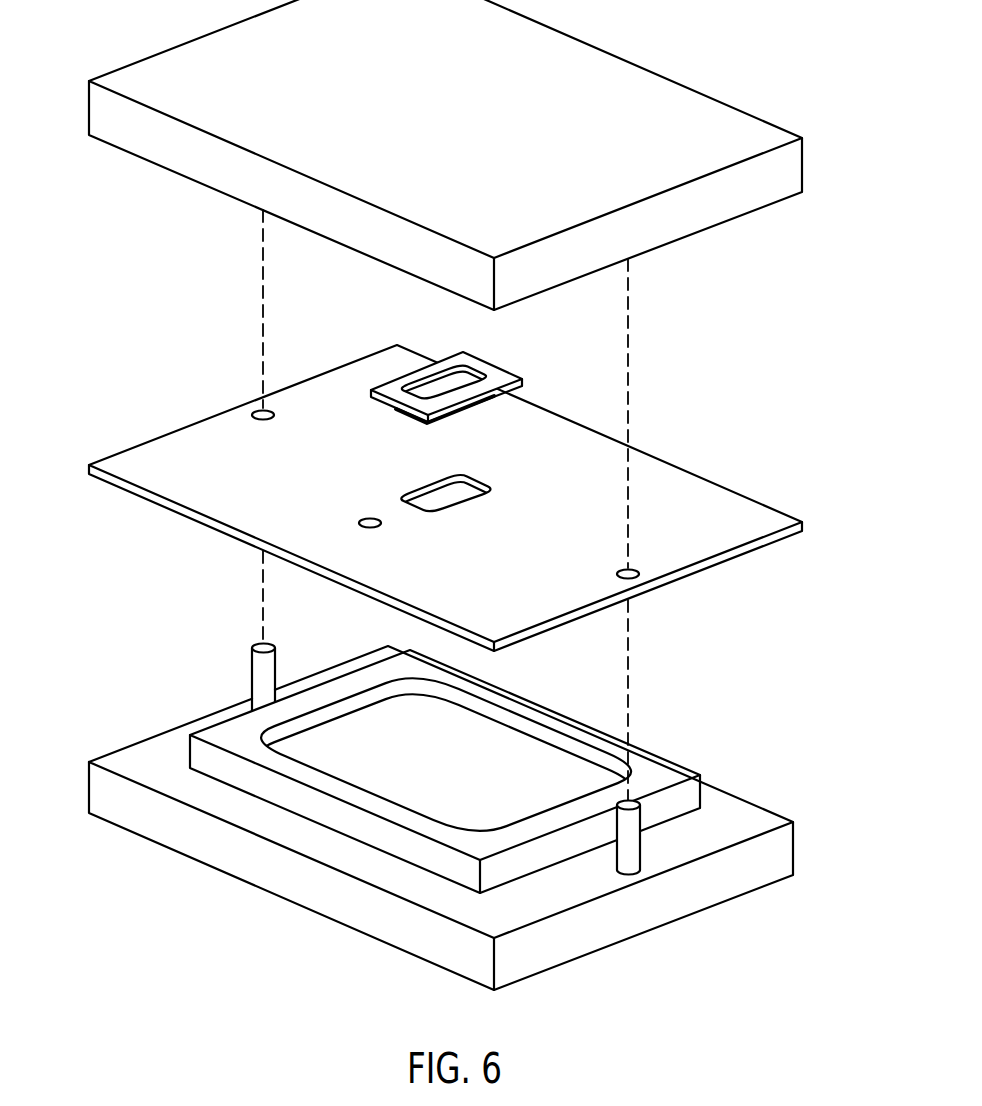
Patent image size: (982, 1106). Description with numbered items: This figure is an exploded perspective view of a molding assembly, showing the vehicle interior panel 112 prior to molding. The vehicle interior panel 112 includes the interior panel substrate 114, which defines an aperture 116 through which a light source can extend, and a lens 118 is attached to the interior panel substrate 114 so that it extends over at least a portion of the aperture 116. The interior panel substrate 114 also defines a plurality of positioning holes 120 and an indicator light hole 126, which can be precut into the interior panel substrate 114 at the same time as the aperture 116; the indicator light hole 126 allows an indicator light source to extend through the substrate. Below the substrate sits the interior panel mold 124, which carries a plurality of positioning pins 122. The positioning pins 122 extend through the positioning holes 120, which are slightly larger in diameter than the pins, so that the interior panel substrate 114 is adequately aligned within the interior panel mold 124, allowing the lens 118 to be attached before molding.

The vehicle interior panel 112 is at (707, 480).
The interior panel substrate 114 is at (762, 548).
The aperture 116 is at (464, 490).
The lens 118 is at (502, 365).
The positioning holes 120 is at (260, 410).
The positioning pins 122 is at (250, 668).
The interior panel mold 124 is at (793, 858).
The indicator light hole 126 is at (368, 516).